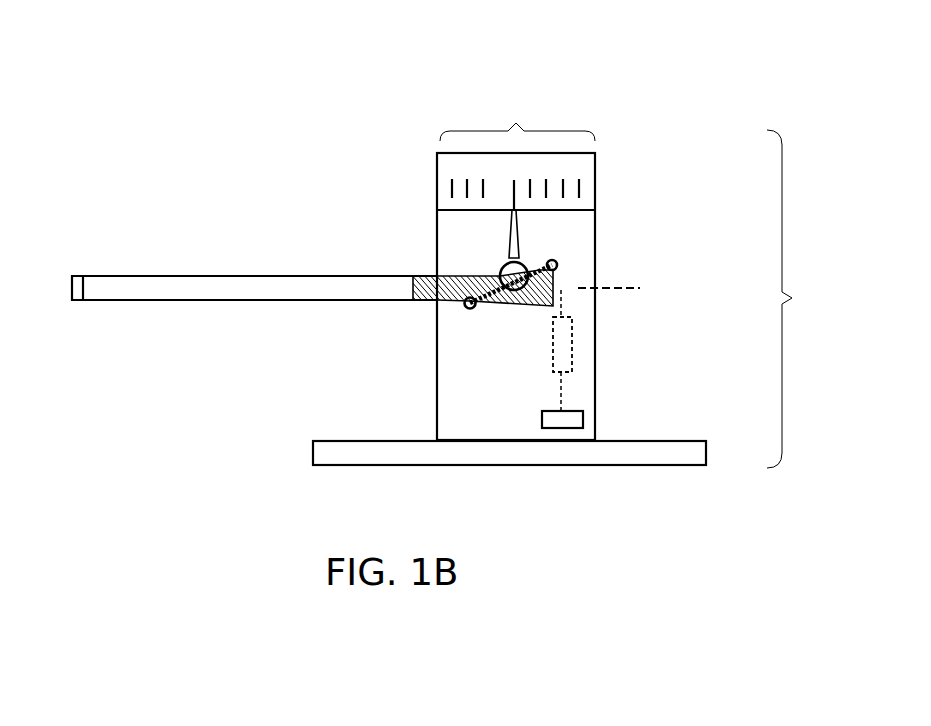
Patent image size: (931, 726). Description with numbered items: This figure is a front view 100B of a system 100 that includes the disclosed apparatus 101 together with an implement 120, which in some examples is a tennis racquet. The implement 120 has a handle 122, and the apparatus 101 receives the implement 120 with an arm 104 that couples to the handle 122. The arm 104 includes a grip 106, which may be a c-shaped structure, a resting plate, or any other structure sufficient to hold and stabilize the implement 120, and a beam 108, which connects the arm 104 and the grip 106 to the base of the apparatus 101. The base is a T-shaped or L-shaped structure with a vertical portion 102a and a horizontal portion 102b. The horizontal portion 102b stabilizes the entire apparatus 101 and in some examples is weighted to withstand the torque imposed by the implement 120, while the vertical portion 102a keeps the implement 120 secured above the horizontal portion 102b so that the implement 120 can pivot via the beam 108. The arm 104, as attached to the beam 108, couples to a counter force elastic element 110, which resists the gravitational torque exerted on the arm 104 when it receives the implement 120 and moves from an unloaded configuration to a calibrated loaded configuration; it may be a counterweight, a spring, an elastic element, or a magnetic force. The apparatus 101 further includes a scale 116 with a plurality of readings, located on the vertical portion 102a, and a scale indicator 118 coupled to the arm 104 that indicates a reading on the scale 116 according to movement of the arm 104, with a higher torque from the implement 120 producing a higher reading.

The system 100 is at (240, 66).
The front view 100B is at (240, 66).
The apparatus 101 is at (805, 299).
The vertical portion 102a is at (594, 312).
The horizontal portion 102b is at (612, 450).
The arm 104 is at (500, 264).
The grip 106 is at (558, 262).
The beam 108 is at (533, 257).
The counter force elastic element 110 is at (573, 350).
The scale 116 is at (516, 122).
The scale indicator 118 is at (503, 191).
The implement 120 is at (213, 287).
The handle 122 is at (440, 277).